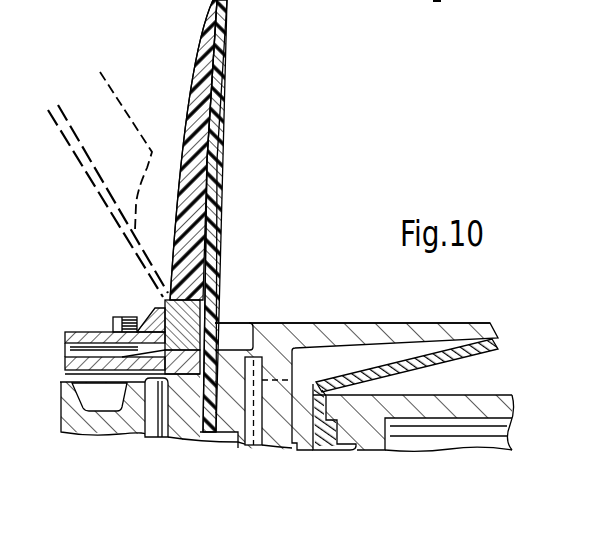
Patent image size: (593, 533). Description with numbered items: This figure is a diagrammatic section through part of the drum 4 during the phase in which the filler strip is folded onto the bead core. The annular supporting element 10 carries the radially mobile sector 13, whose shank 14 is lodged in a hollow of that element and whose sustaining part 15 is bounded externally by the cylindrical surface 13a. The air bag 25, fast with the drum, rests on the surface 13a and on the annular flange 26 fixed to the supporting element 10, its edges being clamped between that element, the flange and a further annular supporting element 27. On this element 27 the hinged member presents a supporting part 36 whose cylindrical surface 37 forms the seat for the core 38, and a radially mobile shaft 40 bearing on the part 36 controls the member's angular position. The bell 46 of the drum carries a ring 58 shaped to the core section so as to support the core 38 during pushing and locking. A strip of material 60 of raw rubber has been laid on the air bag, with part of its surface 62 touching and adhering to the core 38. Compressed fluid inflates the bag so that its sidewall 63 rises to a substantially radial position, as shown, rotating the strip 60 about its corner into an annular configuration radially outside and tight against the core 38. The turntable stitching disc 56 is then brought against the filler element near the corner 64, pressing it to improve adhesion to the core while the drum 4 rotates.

The drum 4 is at (298, 172).
The annular supporting element 10 is at (243, 440).
The sector 13 is at (356, 363).
The cylindrical surface 13a is at (347, 323).
The shank 14 is at (277, 417).
The sustaining part 15 is at (383, 335).
The air bag 25 is at (238, 3).
The annular flange 26 is at (433, 394).
The annular supporting element 27 is at (72, 412).
The supporting part 36 is at (68, 364).
The cylindrical surface 37 is at (216, 323).
The core 38 is at (212, 318).
The shaft 40 is at (158, 422).
The bell 46 is at (86, 334).
The turntable stitching disc 56 is at (85, 132).
The ring 58 is at (113, 318).
The strip of material 60 is at (195, 190).
The surface 62 is at (210, 315).
The sidewall 63 is at (208, 240).
The corner 64 is at (160, 305).